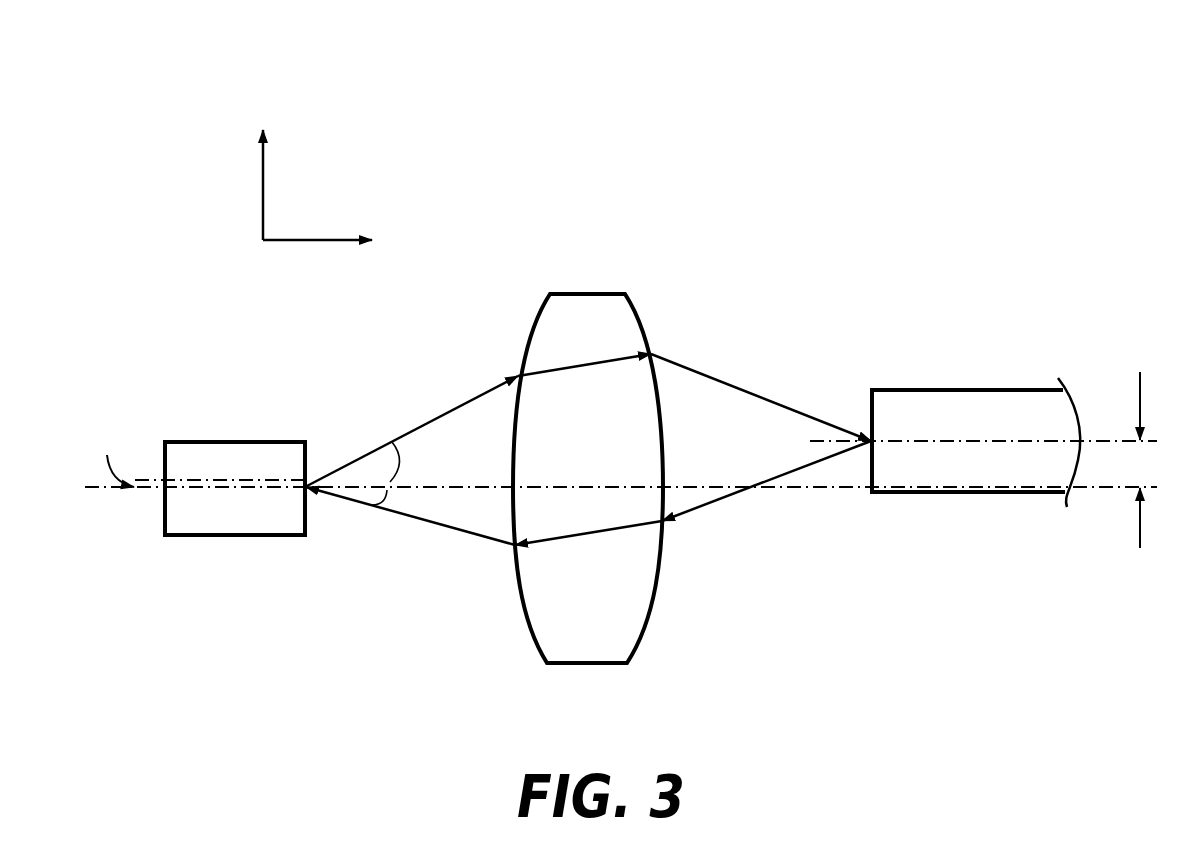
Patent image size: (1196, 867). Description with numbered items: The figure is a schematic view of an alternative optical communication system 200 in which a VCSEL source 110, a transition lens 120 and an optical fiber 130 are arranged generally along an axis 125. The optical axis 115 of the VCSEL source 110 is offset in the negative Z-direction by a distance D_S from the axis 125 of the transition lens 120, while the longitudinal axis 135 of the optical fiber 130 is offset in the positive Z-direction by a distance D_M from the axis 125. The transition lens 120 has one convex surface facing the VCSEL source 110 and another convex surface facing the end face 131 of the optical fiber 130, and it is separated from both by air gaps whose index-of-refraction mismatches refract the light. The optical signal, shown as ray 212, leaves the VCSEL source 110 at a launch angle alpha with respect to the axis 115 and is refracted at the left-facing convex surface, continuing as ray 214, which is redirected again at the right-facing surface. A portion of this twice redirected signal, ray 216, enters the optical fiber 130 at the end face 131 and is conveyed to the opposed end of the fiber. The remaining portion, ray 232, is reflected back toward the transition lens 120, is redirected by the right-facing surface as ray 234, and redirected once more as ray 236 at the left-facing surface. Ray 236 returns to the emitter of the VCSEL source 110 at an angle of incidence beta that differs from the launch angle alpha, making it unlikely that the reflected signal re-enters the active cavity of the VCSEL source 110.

The optical communication system 200 is at (863, 158).
The VCSEL source 110 is at (290, 522).
The optical axis 115 is at (140, 498).
The transition lens 120 is at (583, 302).
The axis 125 is at (560, 482).
The optical fiber 130 is at (955, 488).
The end face 131 is at (864, 405).
The longitudinal axis 135 is at (1117, 430).
The ray 212 is at (447, 412).
The ray 214 is at (565, 370).
The ray 216 is at (680, 362).
The ray 232 is at (742, 491).
The ray 234 is at (607, 525).
The ray 236 is at (472, 530).